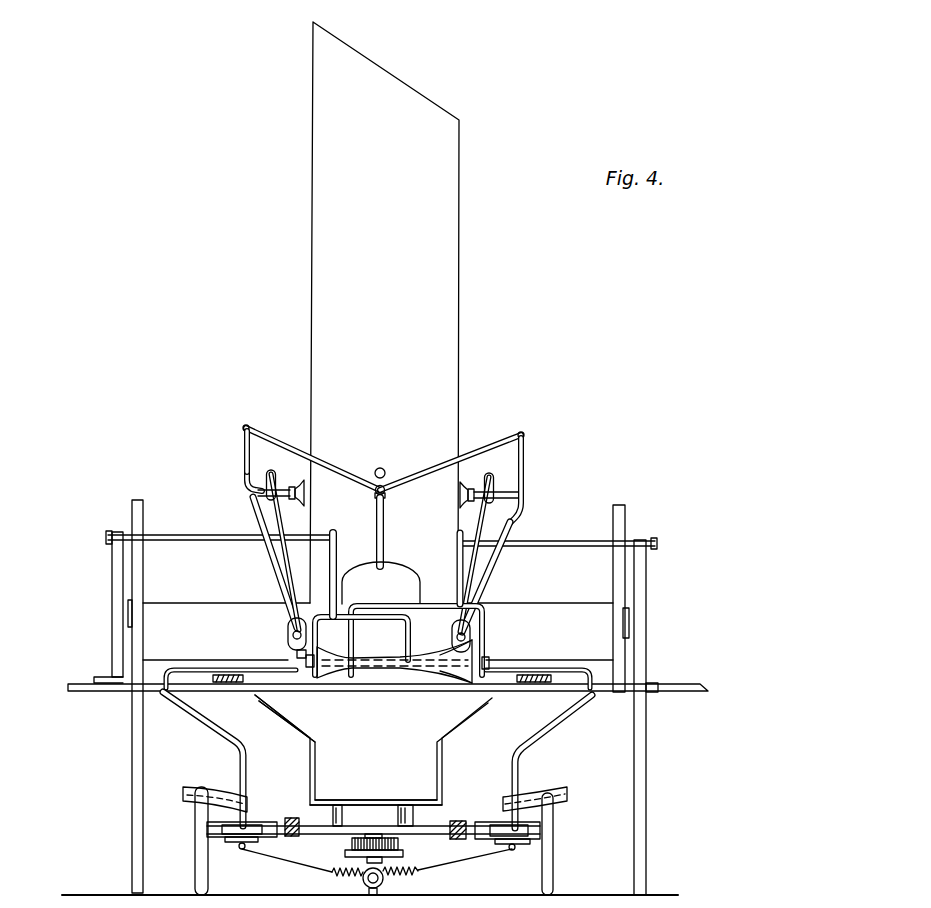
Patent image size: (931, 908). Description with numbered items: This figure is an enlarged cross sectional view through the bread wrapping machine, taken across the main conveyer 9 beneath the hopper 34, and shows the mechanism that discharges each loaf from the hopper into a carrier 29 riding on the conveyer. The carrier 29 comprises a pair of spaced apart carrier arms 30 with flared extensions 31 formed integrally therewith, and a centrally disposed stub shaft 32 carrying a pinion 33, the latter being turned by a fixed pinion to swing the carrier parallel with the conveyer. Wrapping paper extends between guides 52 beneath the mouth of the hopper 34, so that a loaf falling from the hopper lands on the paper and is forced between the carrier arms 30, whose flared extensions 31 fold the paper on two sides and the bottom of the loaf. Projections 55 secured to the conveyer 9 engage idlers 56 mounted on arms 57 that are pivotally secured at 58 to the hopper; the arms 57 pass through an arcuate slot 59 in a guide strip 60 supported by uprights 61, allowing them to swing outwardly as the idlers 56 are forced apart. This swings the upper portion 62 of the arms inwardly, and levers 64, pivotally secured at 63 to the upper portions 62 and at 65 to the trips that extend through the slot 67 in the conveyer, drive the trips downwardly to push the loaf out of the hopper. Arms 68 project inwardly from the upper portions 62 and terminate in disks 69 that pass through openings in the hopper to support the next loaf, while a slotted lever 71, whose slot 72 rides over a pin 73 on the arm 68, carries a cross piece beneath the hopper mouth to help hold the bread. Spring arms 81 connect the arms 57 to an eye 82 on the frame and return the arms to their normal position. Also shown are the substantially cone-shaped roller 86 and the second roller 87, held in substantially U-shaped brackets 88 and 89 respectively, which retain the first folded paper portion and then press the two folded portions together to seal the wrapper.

The hopper 34 is at (384, 314).
The pivot 63 is at (243, 428).
The levers 64 is at (332, 463).
The pivot 65 is at (385, 483).
The slot 67 is at (388, 525).
The arms 68 is at (263, 484).
The disks 69 is at (307, 494).
The slotted lever 71 is at (289, 526).
The slot 72 is at (274, 486).
The pin 73 is at (493, 497).
The upper portion of arms 62 is at (251, 515).
The U-shaped bracket 89 is at (480, 615).
The U-shaped bracket 88 is at (370, 628).
The second roller 87 is at (462, 655).
The cone-shaped roller 86 is at (330, 665).
The pivot 58 is at (293, 636).
The guides 52 is at (222, 673).
The arms 57 is at (209, 727).
The arcuate slot 59 is at (528, 797).
The carrier arms 30 is at (313, 765).
The flared extensions 31 is at (278, 712).
The carrier 29 is at (384, 798).
The guide strip 60 is at (184, 792).
The uprights 61 is at (550, 858).
The main conveyer 9 is at (291, 820).
The projections 55 is at (283, 820).
The idlers 56 is at (222, 829).
The pinion 33 is at (352, 843).
The stub shaft 32 is at (388, 834).
The spring arms 81 is at (331, 872).
The eye 82 is at (383, 882).